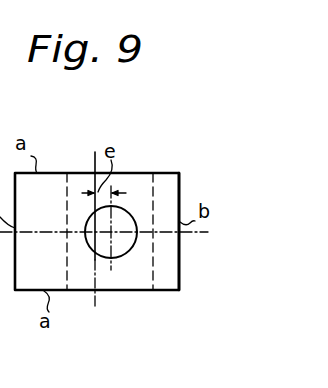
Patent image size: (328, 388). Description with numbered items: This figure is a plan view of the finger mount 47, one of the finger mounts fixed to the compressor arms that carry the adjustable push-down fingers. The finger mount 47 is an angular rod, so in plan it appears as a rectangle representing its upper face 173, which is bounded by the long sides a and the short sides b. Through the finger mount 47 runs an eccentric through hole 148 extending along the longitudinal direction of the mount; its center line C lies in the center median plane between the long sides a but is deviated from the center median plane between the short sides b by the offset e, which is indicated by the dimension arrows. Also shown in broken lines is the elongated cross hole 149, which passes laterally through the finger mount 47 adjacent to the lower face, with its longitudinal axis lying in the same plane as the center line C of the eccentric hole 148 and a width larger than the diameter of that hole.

The finger mount 47 is at (138, 173).
The eccentric through hole 148 is at (122, 255).
The elongated cross hole 149 is at (153, 270).
The upper face 173 is at (171, 192).